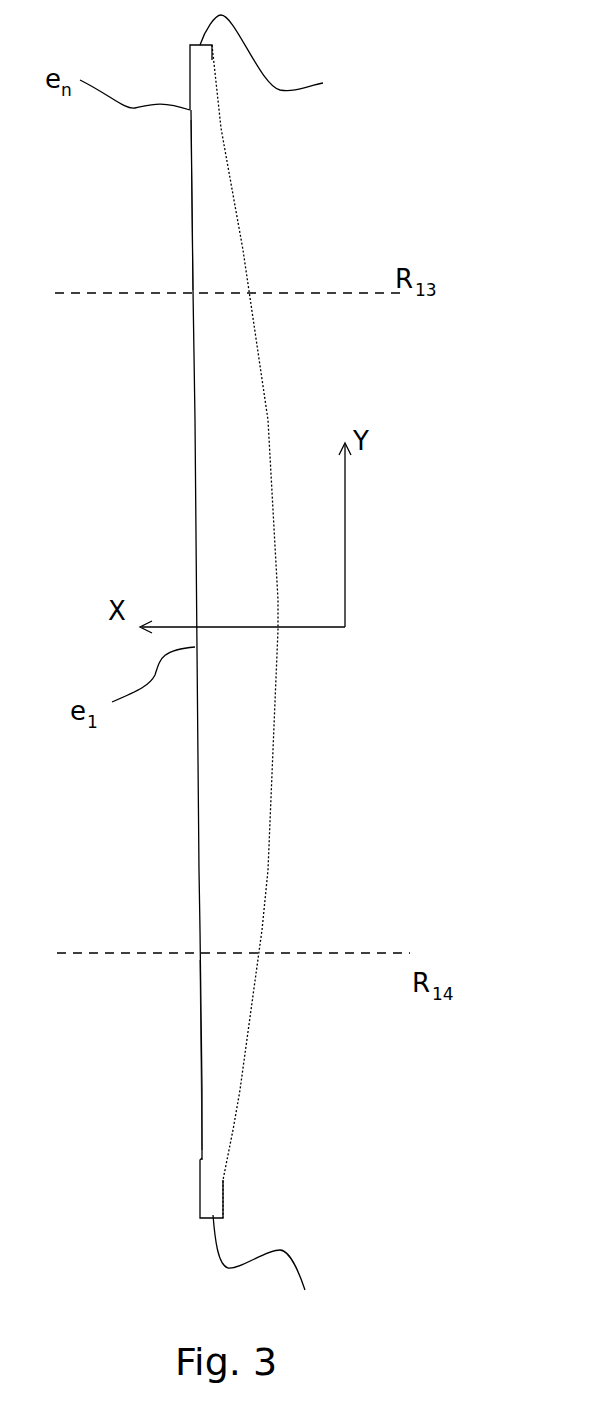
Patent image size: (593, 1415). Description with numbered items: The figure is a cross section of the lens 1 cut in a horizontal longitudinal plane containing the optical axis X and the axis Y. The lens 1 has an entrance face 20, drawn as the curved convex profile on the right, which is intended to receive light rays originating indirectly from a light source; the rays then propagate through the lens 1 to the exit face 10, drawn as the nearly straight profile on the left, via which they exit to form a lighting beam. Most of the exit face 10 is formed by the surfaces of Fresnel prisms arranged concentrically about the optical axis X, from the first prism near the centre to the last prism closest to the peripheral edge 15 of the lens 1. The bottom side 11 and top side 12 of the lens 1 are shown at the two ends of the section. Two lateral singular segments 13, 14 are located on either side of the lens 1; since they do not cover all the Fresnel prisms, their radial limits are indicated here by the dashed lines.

The lens 1 is at (231, 671).
The exit face 10 is at (195, 393).
The bottom side 11 is at (178, 1155).
The top side 12 is at (190, 96).
The lateral singular segment 13 is at (175, 195).
The lateral singular segment 14 is at (170, 1040).
The peripheral edge 15 is at (223, 857).
The entrance face 20 is at (262, 335).